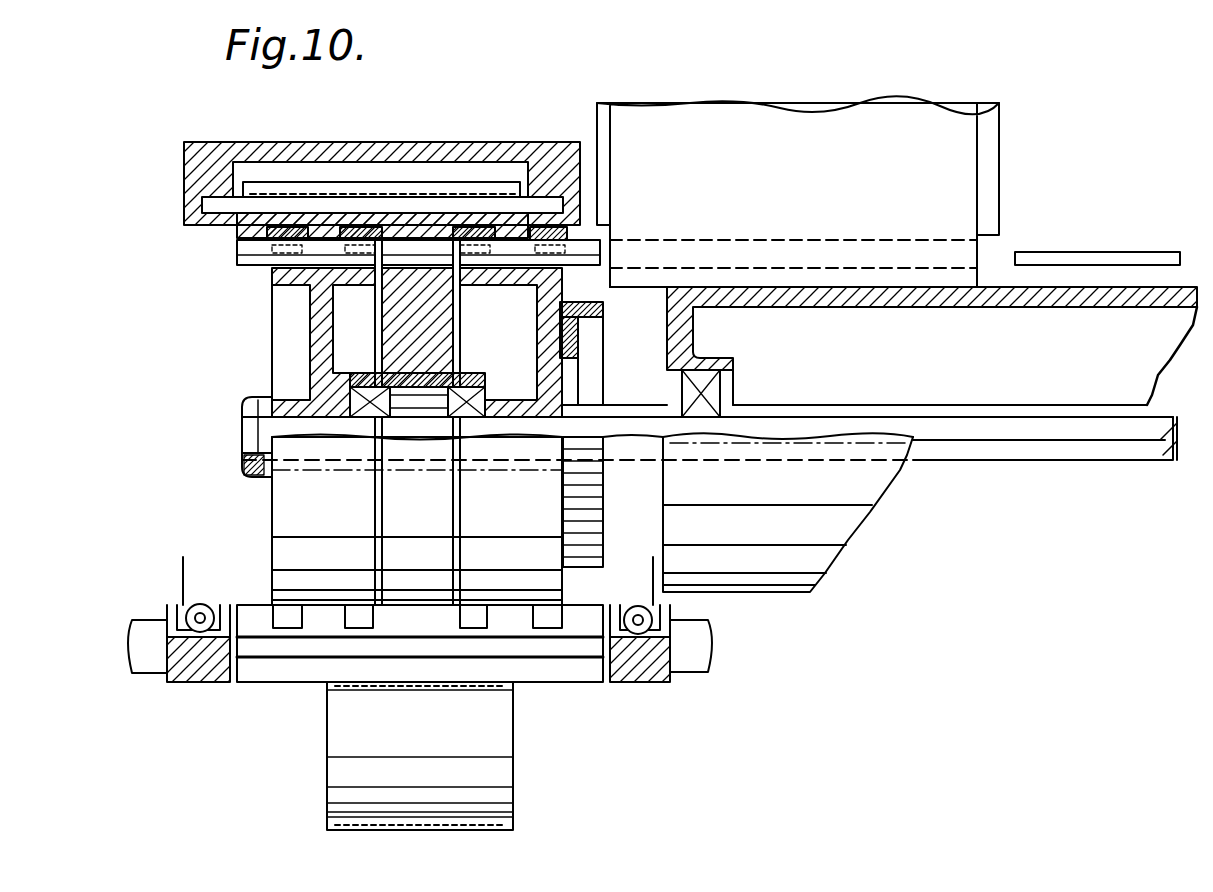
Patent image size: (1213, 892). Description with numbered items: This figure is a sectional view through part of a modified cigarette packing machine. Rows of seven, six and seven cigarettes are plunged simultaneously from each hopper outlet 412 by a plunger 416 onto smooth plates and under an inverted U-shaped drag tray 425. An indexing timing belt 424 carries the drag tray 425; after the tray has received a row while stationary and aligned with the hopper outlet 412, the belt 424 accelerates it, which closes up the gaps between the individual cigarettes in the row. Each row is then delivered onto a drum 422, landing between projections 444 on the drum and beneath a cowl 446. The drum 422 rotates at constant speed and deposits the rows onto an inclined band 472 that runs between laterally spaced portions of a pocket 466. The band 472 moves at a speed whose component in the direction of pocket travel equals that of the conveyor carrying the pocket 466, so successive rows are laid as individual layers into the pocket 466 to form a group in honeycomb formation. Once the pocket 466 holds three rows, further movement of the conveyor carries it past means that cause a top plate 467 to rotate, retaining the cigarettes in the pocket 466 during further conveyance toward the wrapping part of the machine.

The hopper outlet 412 is at (1000, 165).
The plunger 416 is at (1100, 255).
The drum 422 is at (272, 340).
The indexing timing belt 424 is at (388, 192).
The drag tray 425 is at (233, 222).
The projection 444 is at (277, 608).
The cowl 446 is at (282, 238).
The pocket 466 is at (208, 682).
The top plate 467 is at (183, 577).
The inclined band 472 is at (350, 693).